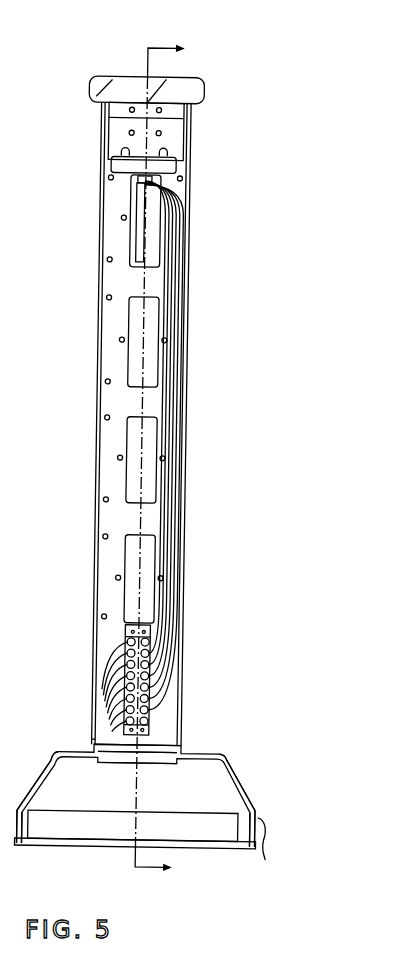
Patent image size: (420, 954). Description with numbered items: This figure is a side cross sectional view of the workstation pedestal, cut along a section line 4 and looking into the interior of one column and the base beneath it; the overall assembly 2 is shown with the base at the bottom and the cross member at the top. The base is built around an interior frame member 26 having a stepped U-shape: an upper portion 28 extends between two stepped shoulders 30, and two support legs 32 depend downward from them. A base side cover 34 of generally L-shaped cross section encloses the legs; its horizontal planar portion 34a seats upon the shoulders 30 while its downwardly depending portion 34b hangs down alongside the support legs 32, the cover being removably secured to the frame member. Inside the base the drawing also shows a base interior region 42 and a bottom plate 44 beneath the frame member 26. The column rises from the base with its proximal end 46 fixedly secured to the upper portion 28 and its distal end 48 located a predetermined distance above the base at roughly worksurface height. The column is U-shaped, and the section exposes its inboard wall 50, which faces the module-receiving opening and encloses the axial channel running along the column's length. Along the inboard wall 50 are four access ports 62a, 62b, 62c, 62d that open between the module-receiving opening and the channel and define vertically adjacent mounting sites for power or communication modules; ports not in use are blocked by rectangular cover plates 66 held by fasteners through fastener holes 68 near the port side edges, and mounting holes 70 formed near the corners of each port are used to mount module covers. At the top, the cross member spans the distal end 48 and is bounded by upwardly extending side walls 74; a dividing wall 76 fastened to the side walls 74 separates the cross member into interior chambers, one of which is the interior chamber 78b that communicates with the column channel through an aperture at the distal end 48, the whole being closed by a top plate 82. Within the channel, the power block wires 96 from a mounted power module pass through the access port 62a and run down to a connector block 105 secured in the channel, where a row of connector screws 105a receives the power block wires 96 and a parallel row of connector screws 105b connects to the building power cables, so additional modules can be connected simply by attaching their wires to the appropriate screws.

The power pedestal assembly 2 is at (141, 487).
The section line 4 is at (159, 463).
The interior frame member 26 is at (58, 795).
The upper portion 28 is at (182, 745).
The stepped shoulder 30 is at (141, 787).
The support leg 32 is at (207, 790).
The base side cover 34 is at (238, 800).
The horizontal planar portion 34a is at (220, 760).
The downwardly depending portion 34b is at (258, 845).
The base chamber 42 is at (198, 830).
The bottom plate 44 is at (134, 843).
The proximal end 46 is at (92, 745).
The distal end 48 is at (161, 67).
The inboard wall 50 is at (100, 440).
The access port 62a is at (160, 238).
The access port 62b is at (193, 458).
The access port 62c is at (192, 458).
The access port 62d is at (192, 458).
The cover plate 66 is at (152, 318).
The fastener hole 68 is at (120, 218).
The mounting hole 70 is at (108, 177).
The cross member side wall 74 is at (145, 102).
The dividing wall 76 is at (115, 132).
The interior chamber 78b is at (190, 140).
The top plate 82 is at (196, 83).
The power block wire 96 is at (168, 480).
The connector block 105 is at (132, 670).
The connector screw 105a is at (145, 653).
The connector screw 105b is at (132, 680).